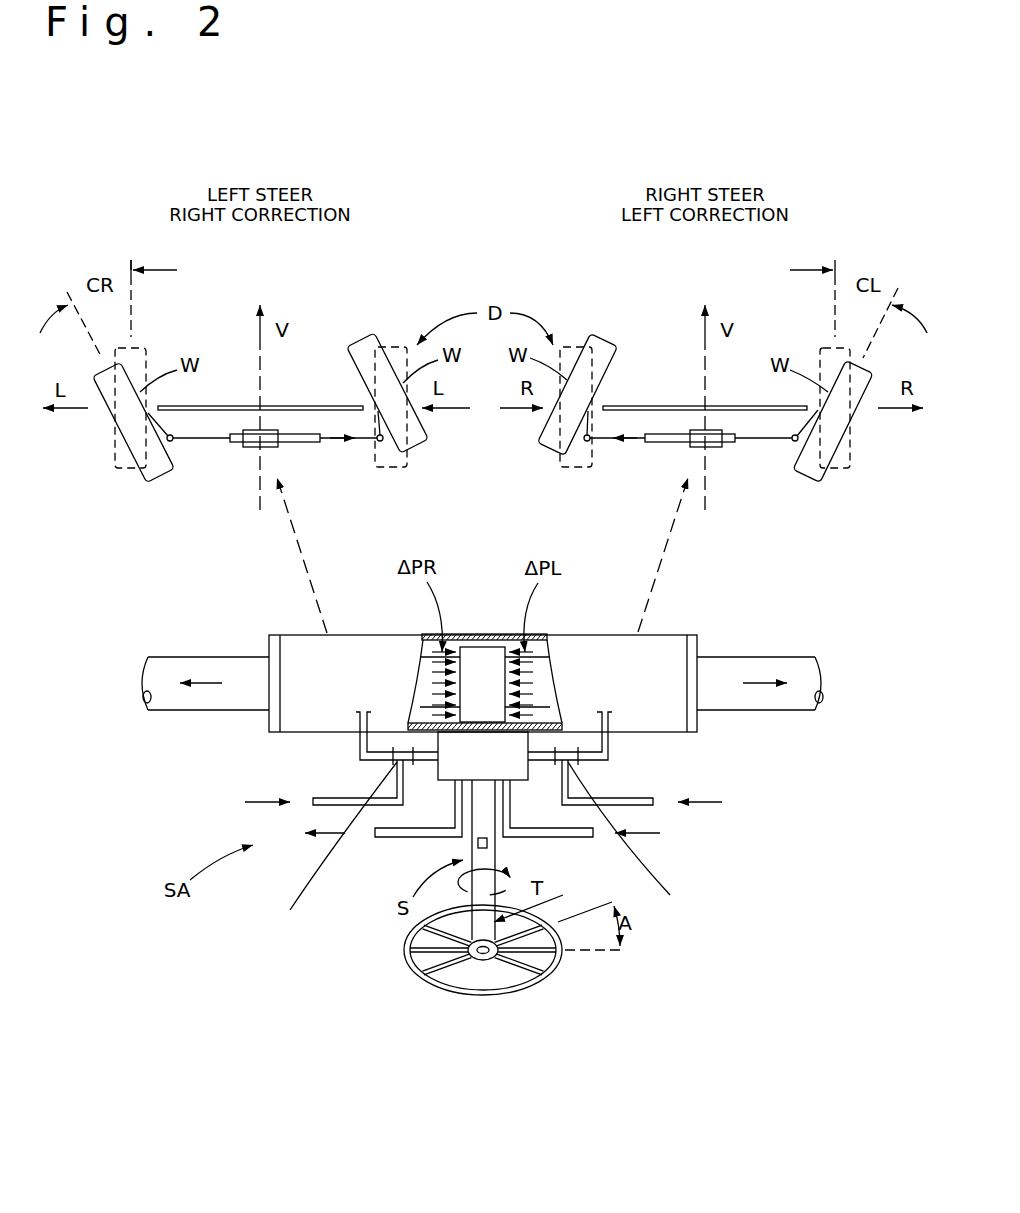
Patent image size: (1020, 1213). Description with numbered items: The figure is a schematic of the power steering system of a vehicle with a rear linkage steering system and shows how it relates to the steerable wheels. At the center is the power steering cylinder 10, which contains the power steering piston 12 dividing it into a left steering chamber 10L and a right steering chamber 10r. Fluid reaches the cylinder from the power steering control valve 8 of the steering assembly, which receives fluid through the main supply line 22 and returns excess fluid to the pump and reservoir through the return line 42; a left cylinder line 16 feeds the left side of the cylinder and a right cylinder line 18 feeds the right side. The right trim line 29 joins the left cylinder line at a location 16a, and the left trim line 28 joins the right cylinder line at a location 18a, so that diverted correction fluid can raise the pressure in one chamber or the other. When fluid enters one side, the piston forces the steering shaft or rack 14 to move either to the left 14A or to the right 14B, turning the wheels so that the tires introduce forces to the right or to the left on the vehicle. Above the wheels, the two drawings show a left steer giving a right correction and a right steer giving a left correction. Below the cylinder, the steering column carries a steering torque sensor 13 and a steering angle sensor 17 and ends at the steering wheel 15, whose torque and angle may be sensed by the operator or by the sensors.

The power steering control valve 8 is at (520, 783).
The power steering cylinder 10 is at (660, 633).
The left steering chamber 10L is at (430, 647).
The right steering chamber 10r is at (537, 647).
The power steering piston 12 is at (500, 640).
The steering torque sensor 13 is at (477, 845).
The steering shaft or rack 14 is at (722, 648).
The left shaft extension 14A is at (178, 683).
The right shaft extension 14B is at (775, 682).
The steering wheel 15 is at (472, 997).
The left cylinder line 16 is at (360, 742).
The location on left cylinder line 16a is at (334, 852).
The steering angle sensor 17 is at (544, 901).
The right cylinder line 18 is at (610, 742).
The location on right cylinder line 18a is at (633, 843).
The main supply line 22 is at (567, 838).
The left correction or trim line 28 is at (612, 797).
The right correction or trim line 29 is at (358, 798).
The return line 42 is at (392, 838).